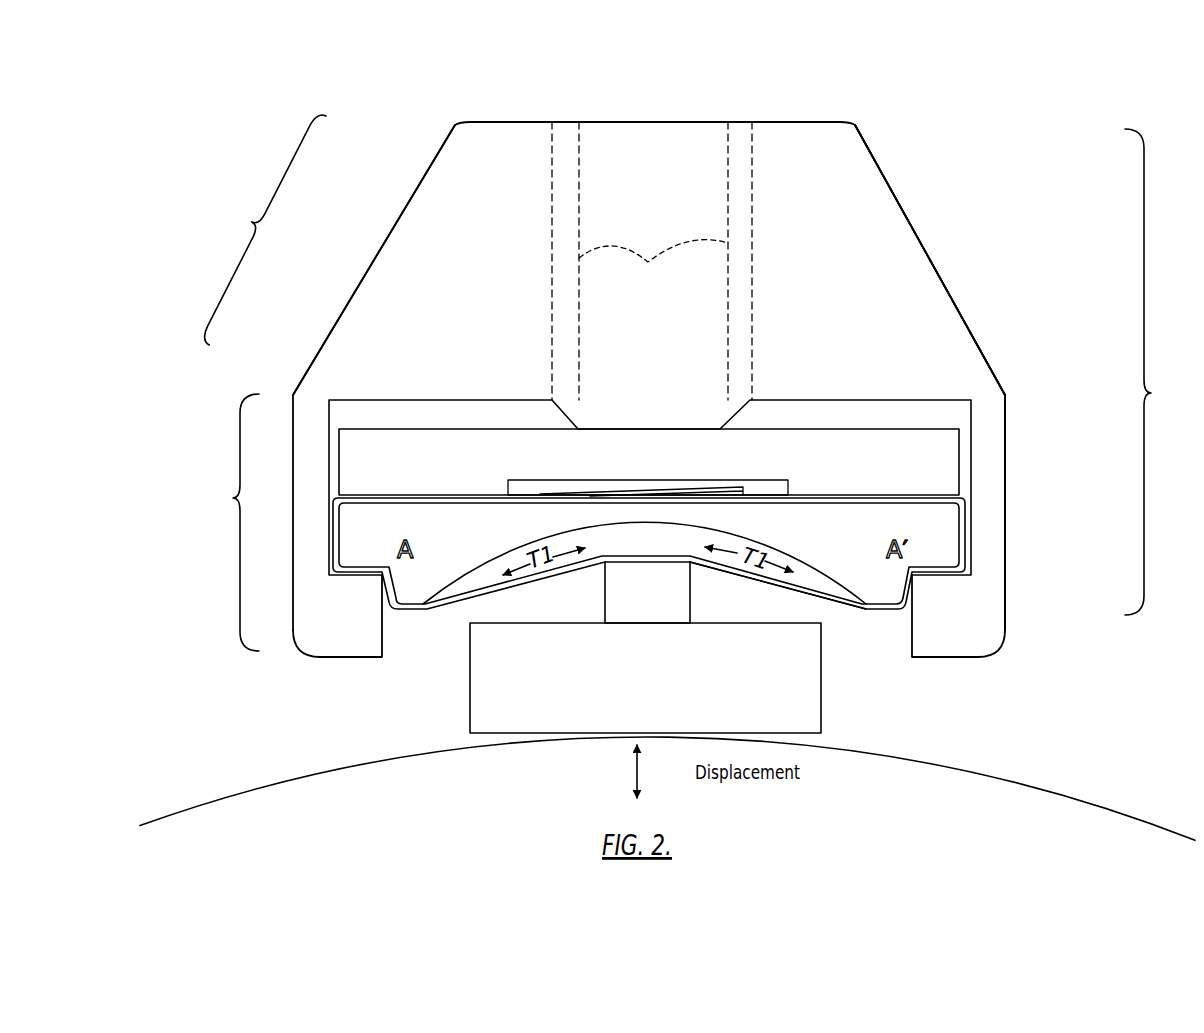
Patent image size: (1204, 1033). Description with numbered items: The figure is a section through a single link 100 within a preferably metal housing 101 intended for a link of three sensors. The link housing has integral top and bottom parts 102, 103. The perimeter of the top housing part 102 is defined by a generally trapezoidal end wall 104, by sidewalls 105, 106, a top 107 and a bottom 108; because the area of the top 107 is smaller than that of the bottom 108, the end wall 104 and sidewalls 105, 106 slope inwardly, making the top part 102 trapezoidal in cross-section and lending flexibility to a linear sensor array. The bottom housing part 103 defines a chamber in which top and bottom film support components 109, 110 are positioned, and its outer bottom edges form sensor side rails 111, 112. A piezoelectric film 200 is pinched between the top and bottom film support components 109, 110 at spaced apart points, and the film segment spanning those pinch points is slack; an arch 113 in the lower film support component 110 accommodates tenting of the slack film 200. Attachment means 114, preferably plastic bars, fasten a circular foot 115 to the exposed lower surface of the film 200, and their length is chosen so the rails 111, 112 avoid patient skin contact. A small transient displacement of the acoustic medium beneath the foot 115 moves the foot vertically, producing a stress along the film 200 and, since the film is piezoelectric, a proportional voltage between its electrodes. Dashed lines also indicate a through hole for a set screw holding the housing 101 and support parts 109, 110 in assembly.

The link 100 is at (534, 92).
The housing 101 is at (1160, 372).
The top housing part 102 is at (259, 226).
The bottom housing part 103 is at (225, 522).
The end wall 104 is at (868, 222).
The sidewall 105 is at (932, 252).
The sidewall 106 is at (408, 199).
The top 107 is at (700, 120).
The bottom 108 is at (886, 398).
The top film support component 109 is at (649, 462).
The bottom film support component 110 is at (649, 553).
The sensor side rail 111 is at (338, 659).
The sensor side rail 112 is at (952, 659).
The arch 113 is at (548, 540).
The foot attachment means 114 is at (647, 592).
The circular foot 115 is at (645, 486).
The film 200 is at (713, 576).